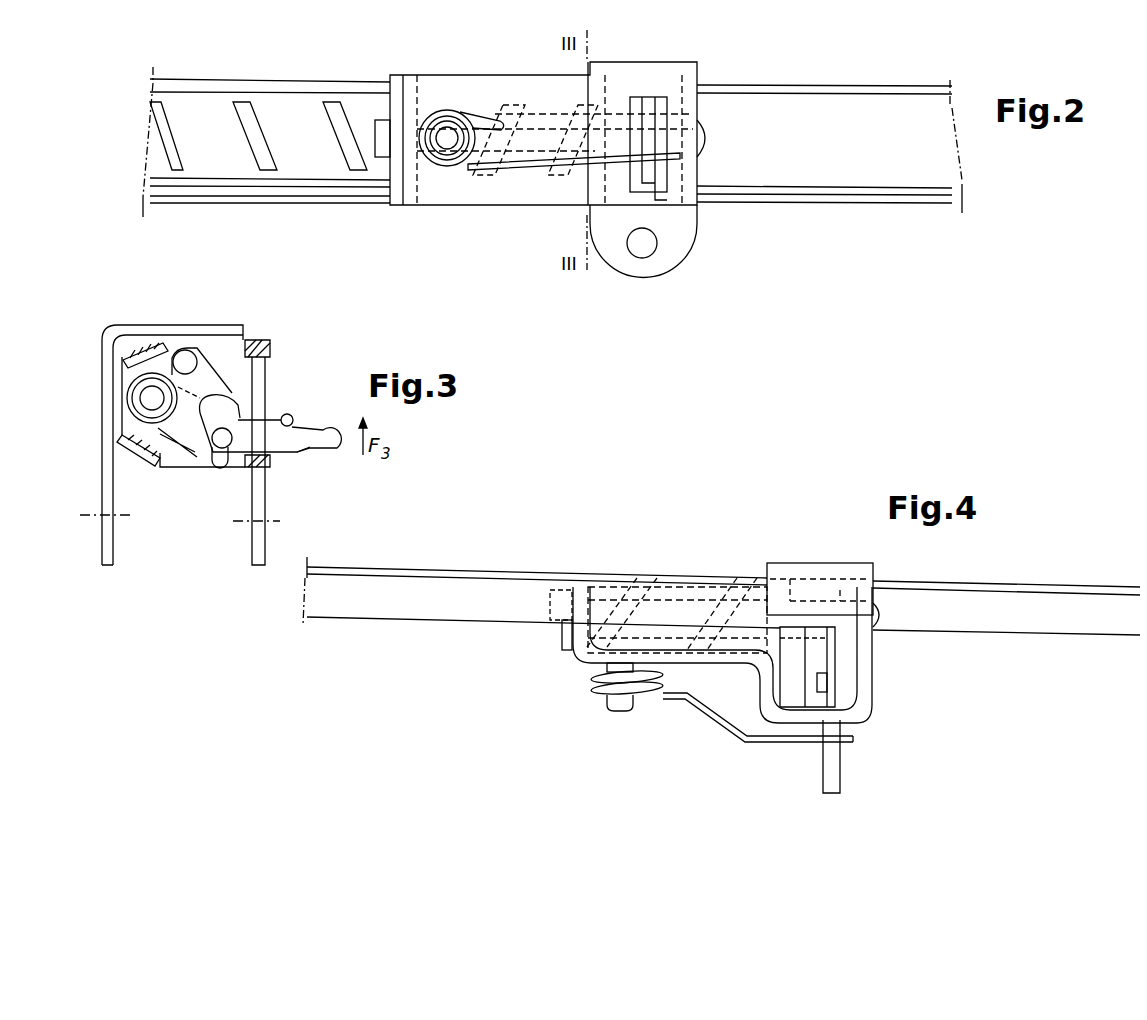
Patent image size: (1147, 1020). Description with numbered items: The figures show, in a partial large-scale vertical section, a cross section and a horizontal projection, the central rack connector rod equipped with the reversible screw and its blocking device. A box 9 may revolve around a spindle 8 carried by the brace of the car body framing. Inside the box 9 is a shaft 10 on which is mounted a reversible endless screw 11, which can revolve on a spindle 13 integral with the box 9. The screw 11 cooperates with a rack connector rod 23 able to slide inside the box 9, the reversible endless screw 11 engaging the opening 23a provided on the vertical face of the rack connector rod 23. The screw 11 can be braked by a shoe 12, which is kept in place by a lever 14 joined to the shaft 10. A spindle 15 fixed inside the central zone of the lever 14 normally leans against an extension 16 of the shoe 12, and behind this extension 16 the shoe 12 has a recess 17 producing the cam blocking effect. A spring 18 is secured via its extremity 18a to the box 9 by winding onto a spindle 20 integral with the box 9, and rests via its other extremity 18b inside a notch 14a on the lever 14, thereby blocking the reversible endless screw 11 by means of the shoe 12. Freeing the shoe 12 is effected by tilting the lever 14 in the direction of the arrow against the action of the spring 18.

In FIG. 2, the spindle 8 is at (650, 247).
In FIG. 3, the spindle 8 is at (100, 515).
In FIG. 2, the box 9 is at (503, 110).
In FIG. 3, the box 9 is at (240, 360).
In FIG. 4, the box 9 is at (587, 662).
In FIG. 2, the shaft 10 is at (381, 158).
In FIG. 3, the shaft 10 is at (150, 400).
In FIG. 4, the shaft 10 is at (882, 617).
In FIG. 2, the reversible endless screw 11 is at (468, 170).
In FIG. 3, the reversible endless screw 11 is at (127, 398).
In FIG. 4, the reversible endless screw 11 is at (643, 577).
In FIG. 2, the shoe 12 is at (641, 103).
In FIG. 3, the shoe 12 is at (210, 370).
In FIG. 4, the shoe 12 is at (812, 676).
In FIG. 3, the spindle 13 is at (186, 360).
In FIG. 4, the spindle 13 is at (820, 597).
In FIG. 2, the lever 14 is at (660, 170).
In FIG. 3, the lever 14 is at (280, 440).
In FIG. 4, the lever 14 is at (838, 698).
In FIG. 3, the notch 14a is at (305, 440).
In FIG. 3, the spindle 15 is at (222, 449).
In FIG. 3, the extension 16 is at (210, 452).
In FIG. 4, the extension 16 is at (822, 694).
In FIG. 3, the recess 17 is at (224, 400).
In FIG. 2, the spring 18 is at (435, 170).
In FIG. 4, the spring 18 is at (663, 698).
In FIG. 2, the extremity 18a is at (498, 125).
In FIG. 4, the extremity 18a is at (668, 678).
In FIG. 3, the extremity 18b is at (293, 420).
In FIG. 4, the extremity 18b is at (856, 739).
In FIG. 2, the spindle 20 is at (445, 140).
In FIG. 4, the spindle 20 is at (612, 672).
In FIG. 2, the rack connector rod 23 is at (308, 170).
In FIG. 3, the rack connector rod 23 is at (133, 345).
In FIG. 4, the rack connector rod 23 is at (360, 600).
In FIG. 2, the opening 23a is at (248, 112).
In FIG. 3, the opening 23a is at (122, 375).
In FIG. 4, the opening 23a is at (647, 590).